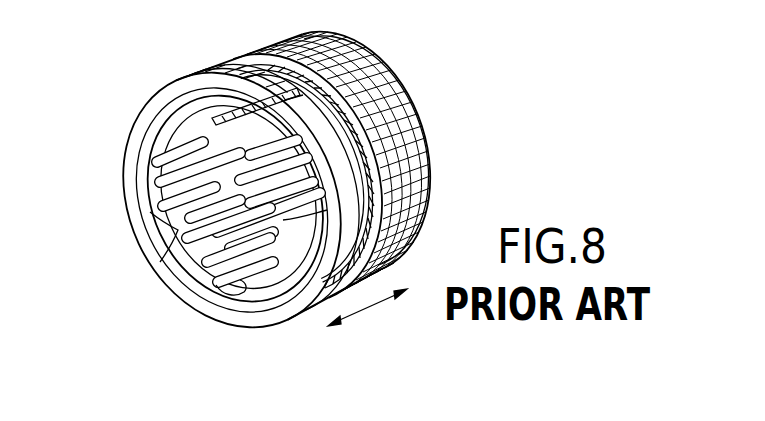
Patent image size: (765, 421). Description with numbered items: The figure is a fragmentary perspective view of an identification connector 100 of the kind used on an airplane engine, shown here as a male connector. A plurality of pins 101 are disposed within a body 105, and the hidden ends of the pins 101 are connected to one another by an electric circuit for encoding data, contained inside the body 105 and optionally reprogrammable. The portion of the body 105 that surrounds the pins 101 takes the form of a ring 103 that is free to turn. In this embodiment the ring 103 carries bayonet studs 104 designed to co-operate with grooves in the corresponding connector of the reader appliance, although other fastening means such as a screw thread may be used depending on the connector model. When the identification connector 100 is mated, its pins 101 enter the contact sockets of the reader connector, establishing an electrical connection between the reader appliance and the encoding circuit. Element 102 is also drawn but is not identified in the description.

The identification connector 100 is at (272, 181).
The pins 101 is at (172, 197).
The coupling ring body 102 is at (250, 55).
The ring 103 is at (207, 78).
The bayonet studs 104 is at (231, 296).
The body 105 is at (407, 182).